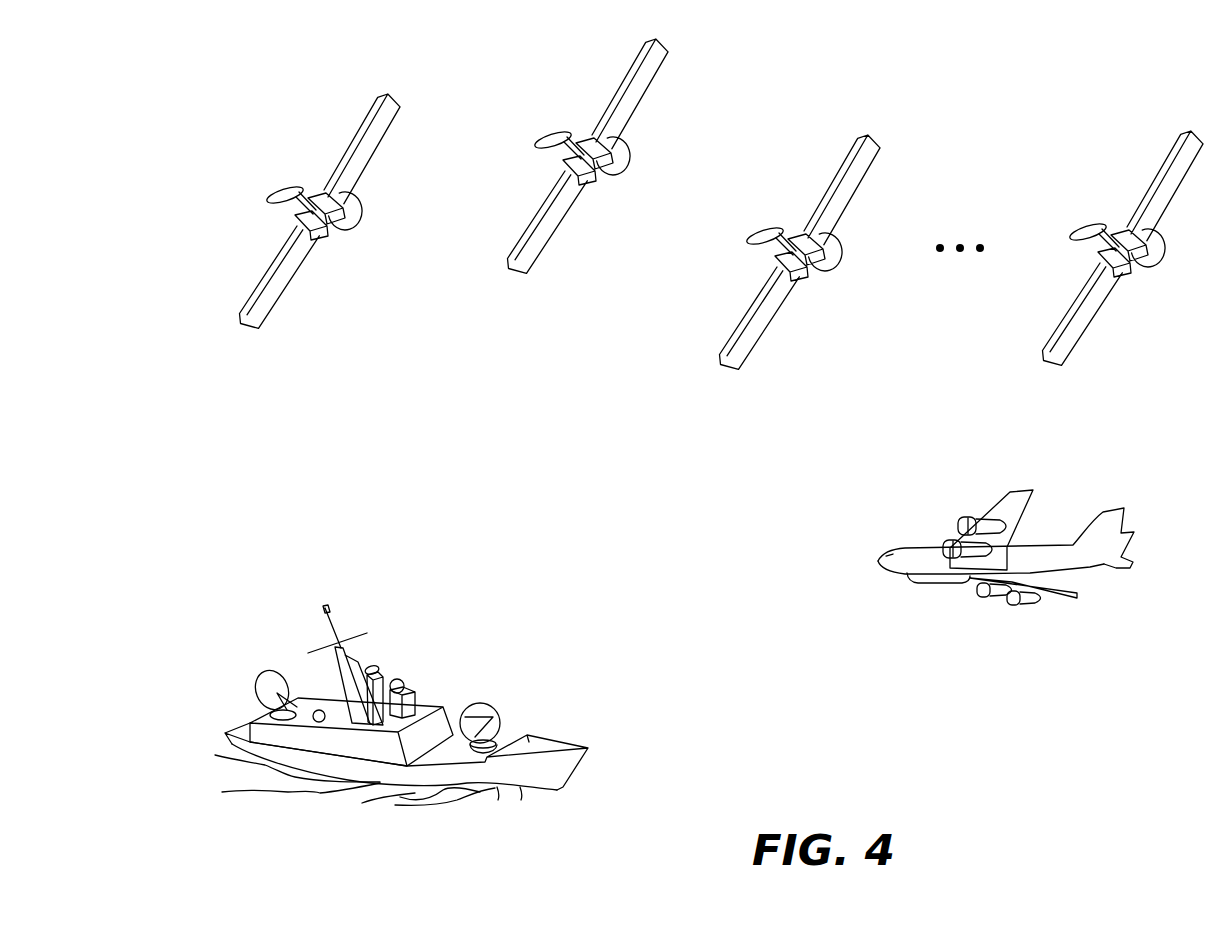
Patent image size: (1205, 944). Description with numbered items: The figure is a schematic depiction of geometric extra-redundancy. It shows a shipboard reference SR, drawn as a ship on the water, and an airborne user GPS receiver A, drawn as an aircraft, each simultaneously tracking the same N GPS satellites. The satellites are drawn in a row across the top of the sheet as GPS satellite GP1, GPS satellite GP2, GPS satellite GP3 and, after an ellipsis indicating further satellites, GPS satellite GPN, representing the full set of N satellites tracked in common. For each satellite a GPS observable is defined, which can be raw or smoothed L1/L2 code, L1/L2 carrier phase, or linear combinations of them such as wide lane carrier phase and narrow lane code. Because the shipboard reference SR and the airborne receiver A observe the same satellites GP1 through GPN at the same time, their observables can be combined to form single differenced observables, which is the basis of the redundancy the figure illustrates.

The GPS satellite GP1 is at (534, 143).
The GPS satellite GP2 is at (268, 197).
The GPS satellite GP3 is at (750, 240).
The GPS satellite GPN is at (1075, 234).
The airborne user GPS receiver A is at (953, 581).
The shipboard reference SR is at (362, 752).